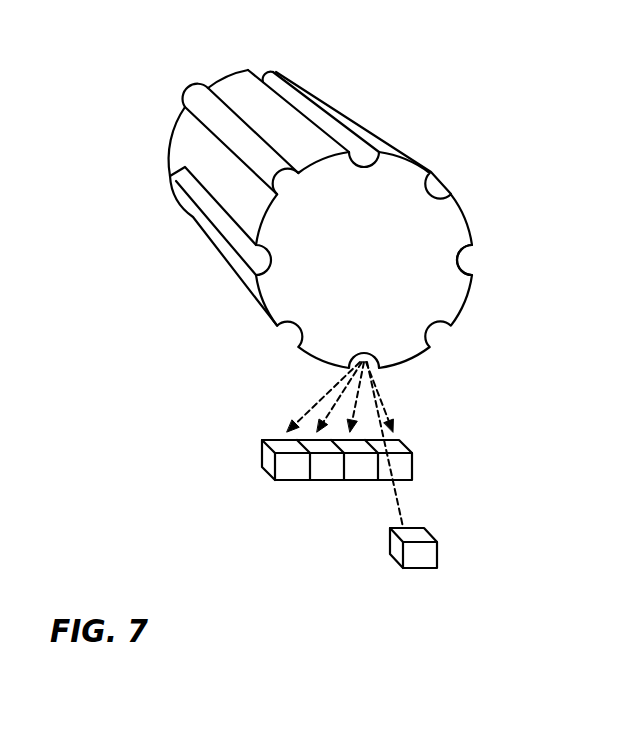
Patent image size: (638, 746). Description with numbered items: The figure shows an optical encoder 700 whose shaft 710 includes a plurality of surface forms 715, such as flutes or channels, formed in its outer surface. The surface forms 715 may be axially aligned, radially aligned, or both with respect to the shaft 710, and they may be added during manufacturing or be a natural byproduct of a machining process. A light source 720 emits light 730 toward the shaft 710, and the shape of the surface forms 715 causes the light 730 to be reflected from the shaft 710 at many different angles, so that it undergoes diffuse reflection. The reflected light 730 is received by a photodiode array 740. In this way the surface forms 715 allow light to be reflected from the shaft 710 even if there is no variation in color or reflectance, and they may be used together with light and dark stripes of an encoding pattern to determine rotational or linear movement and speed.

The optical encoder 700 is at (143, 90).
The shaft 710 is at (170, 191).
The surface forms 715 is at (462, 262).
The light source 720 is at (388, 552).
The light 730 is at (397, 496).
The photodiode array 740 is at (262, 458).